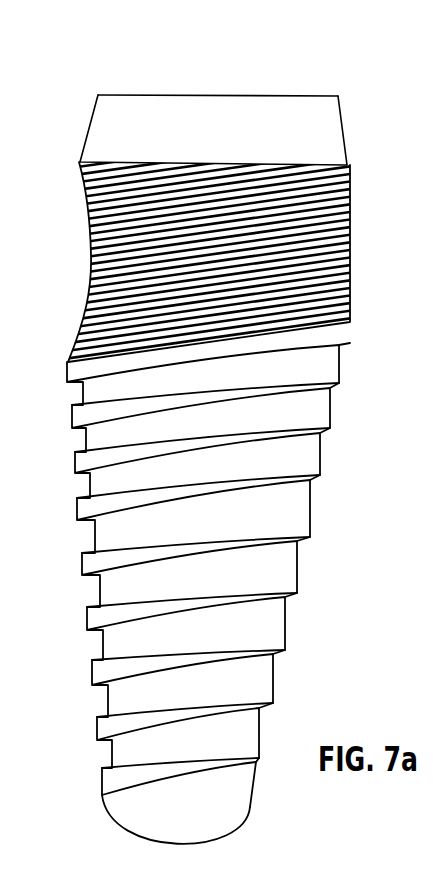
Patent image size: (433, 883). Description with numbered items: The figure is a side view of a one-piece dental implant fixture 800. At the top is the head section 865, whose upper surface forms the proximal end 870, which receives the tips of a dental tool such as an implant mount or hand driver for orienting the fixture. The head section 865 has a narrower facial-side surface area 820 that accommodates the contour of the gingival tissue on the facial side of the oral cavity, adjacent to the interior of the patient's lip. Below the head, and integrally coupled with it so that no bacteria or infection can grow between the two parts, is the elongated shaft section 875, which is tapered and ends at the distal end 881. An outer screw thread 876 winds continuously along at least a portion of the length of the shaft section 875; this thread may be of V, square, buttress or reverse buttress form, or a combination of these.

The dental implant fixture 800 is at (72, 90).
The head section 865 is at (342, 106).
The proximal end 870 is at (205, 94).
The facial-side surface area 820 is at (88, 268).
The elongated shaft section 875 is at (322, 478).
The outer screw thread 876 is at (313, 538).
The distal end 881 is at (223, 833).